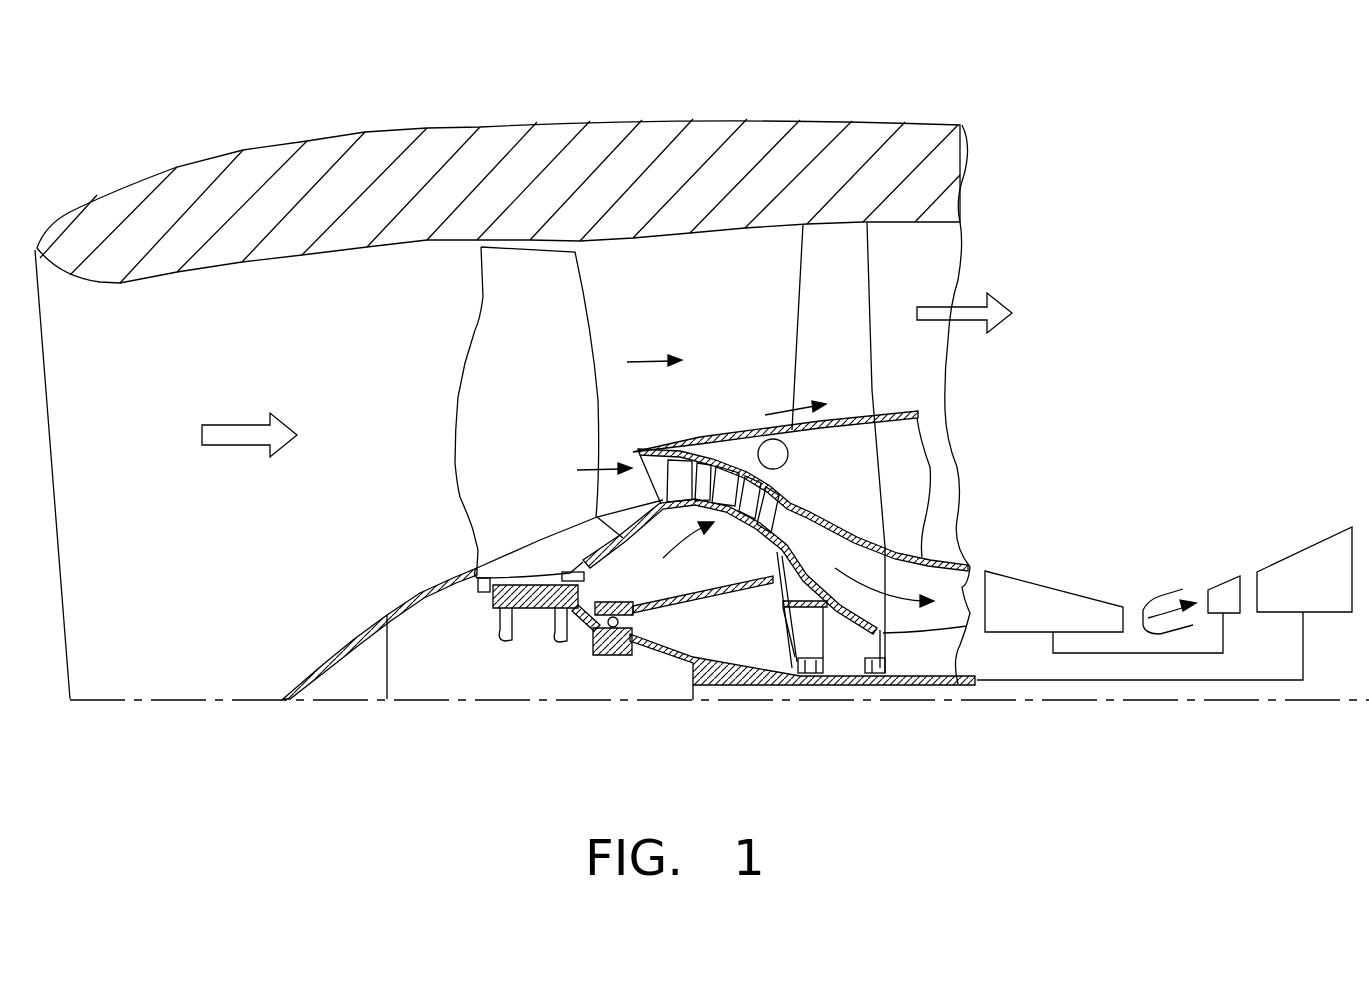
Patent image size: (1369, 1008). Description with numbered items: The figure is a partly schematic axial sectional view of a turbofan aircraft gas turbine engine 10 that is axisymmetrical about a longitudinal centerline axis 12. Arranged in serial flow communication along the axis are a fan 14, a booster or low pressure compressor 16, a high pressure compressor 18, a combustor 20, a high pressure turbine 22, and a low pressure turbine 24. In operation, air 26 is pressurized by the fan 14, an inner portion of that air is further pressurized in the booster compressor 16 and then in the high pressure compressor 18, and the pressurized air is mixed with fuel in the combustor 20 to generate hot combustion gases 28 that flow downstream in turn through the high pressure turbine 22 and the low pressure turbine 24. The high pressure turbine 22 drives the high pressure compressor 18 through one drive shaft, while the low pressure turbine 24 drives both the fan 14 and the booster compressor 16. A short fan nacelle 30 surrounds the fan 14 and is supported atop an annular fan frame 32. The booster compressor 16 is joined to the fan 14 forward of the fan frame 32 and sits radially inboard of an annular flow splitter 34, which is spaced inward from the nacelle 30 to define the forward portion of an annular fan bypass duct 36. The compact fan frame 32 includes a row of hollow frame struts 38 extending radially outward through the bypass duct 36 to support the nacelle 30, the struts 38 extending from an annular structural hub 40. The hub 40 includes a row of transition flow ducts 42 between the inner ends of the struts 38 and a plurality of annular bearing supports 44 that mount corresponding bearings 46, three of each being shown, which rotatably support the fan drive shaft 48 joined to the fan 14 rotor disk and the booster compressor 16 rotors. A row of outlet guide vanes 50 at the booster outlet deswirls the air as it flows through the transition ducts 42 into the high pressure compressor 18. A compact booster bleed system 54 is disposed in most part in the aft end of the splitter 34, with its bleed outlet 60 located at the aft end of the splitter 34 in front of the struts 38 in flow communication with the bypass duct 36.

The turbofan aircraft gas turbine engine 10 is at (1158, 118).
The longitudinal centerline axis 12 is at (1203, 702).
The fan 14 is at (532, 406).
The booster or low pressure compressor 16 is at (595, 546).
The high pressure compressor 18 is at (1049, 623).
The combustor 20 is at (1155, 597).
The high pressure turbine 22 is at (1217, 588).
The low pressure turbine 24 is at (1314, 598).
The air 26 is at (243, 445).
The hot combustion gases 28 is at (1170, 597).
The fan nacelle 30 is at (470, 126).
The fan frame 32 is at (878, 282).
The annular flow splitter 34 is at (703, 435).
The fan bypass duct 36 is at (719, 289).
The hollow frame struts 38 is at (853, 271).
The annular structural hub 40 is at (818, 612).
The transition flow ducts 42 is at (827, 559).
The annular bearing supports 44 is at (783, 640).
The bearings 46 is at (803, 685).
The fan drive shaft 48 is at (727, 660).
The outlet guide vanes 50 is at (806, 508).
The booster bleed system 54 is at (786, 460).
The bleed outlet 60 is at (768, 437).